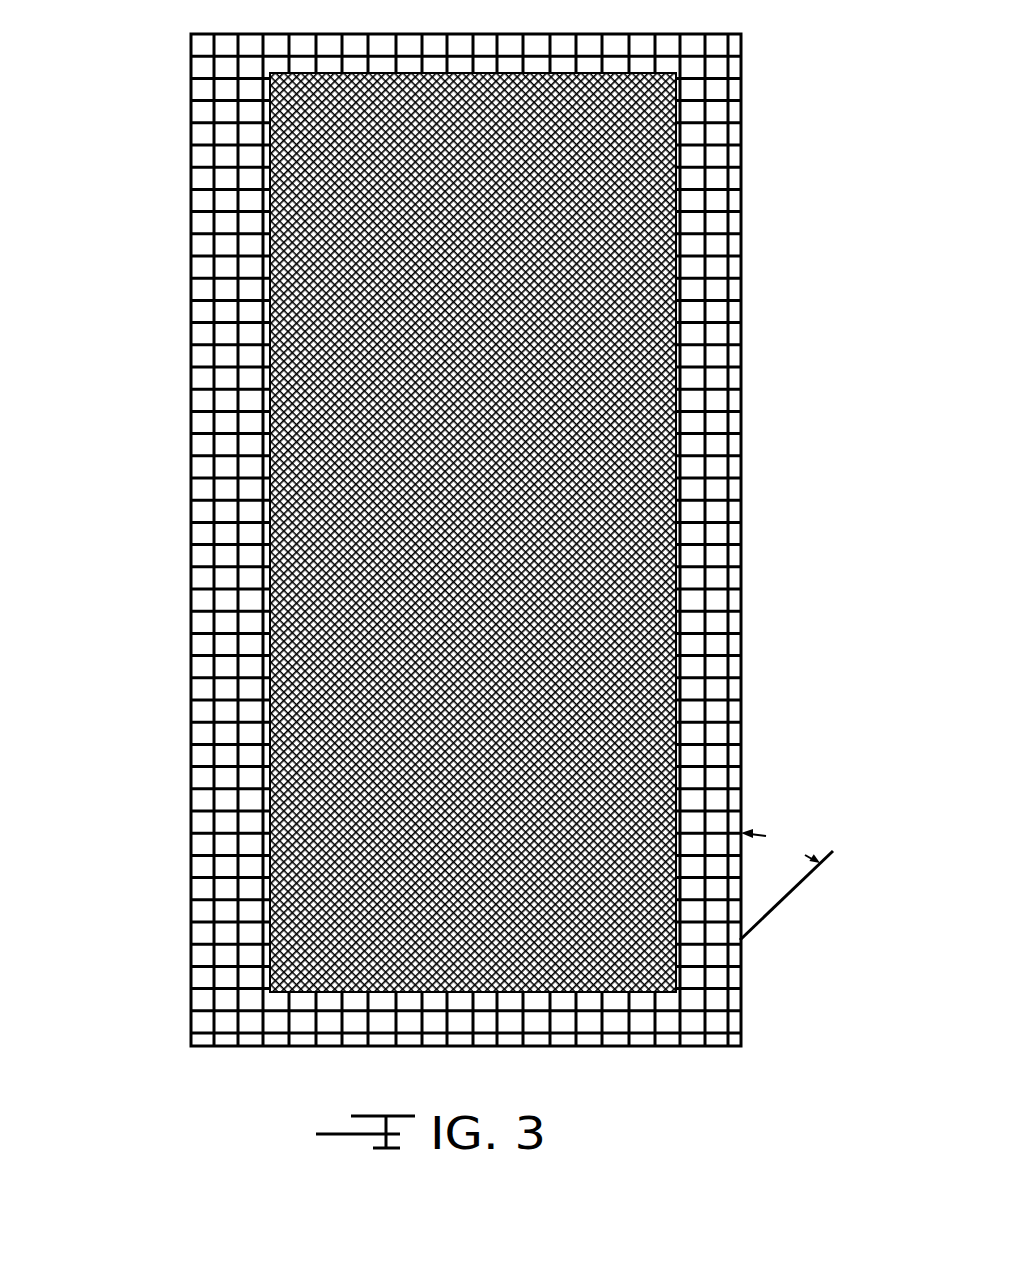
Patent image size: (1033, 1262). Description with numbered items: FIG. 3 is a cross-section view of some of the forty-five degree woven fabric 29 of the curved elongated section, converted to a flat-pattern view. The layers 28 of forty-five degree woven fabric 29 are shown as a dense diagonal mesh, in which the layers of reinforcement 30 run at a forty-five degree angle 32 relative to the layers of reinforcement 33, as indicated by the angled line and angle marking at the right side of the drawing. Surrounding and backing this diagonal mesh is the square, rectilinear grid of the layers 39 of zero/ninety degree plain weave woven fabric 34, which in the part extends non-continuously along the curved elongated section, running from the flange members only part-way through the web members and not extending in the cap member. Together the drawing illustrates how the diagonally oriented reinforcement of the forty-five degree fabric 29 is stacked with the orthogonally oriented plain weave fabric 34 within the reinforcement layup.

The layers of 45° woven fabric 28 is at (363, 532).
The 45° woven fabric 29 is at (473, 532).
The layers of reinforcement 30 is at (338, 402).
The 45° angle 32 is at (780, 813).
The layers of reinforcement 33 is at (531, 540).
The 0/90° woven fabric 34 is at (740, 92).
The layers of 0/90° woven fabric 39 is at (531, 540).